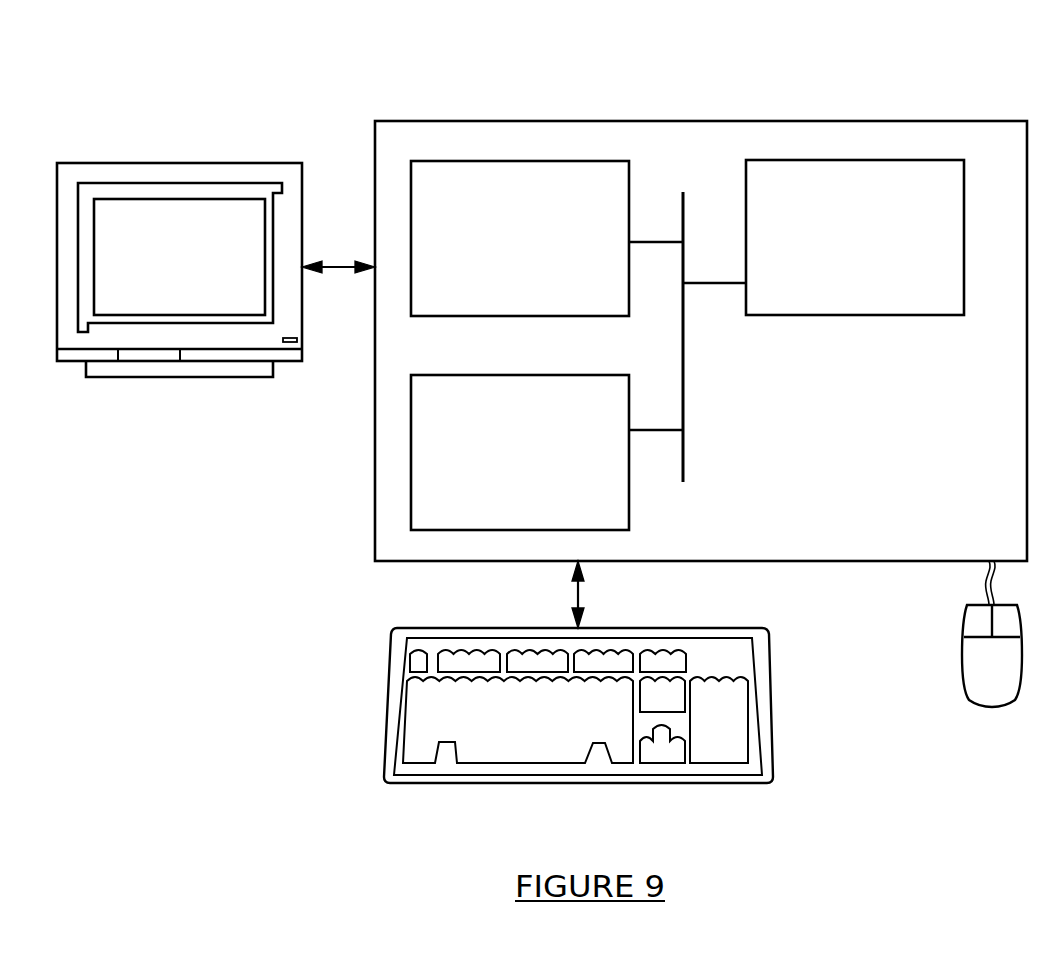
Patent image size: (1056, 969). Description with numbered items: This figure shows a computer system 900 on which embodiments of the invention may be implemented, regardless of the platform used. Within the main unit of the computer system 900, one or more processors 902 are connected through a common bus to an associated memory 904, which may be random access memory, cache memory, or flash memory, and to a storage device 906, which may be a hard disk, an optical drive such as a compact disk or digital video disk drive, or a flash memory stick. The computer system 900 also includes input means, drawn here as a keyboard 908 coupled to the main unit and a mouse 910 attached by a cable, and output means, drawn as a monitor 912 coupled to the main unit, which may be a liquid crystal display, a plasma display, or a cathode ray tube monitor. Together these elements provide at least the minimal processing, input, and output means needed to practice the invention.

The computer system 900 is at (701, 292).
The processor 902 is at (850, 249).
The memory 904 is at (499, 249).
The storage device 906 is at (499, 462).
The keyboard 908 is at (491, 742).
The mouse 910 is at (971, 676).
The monitor 912 is at (156, 272).